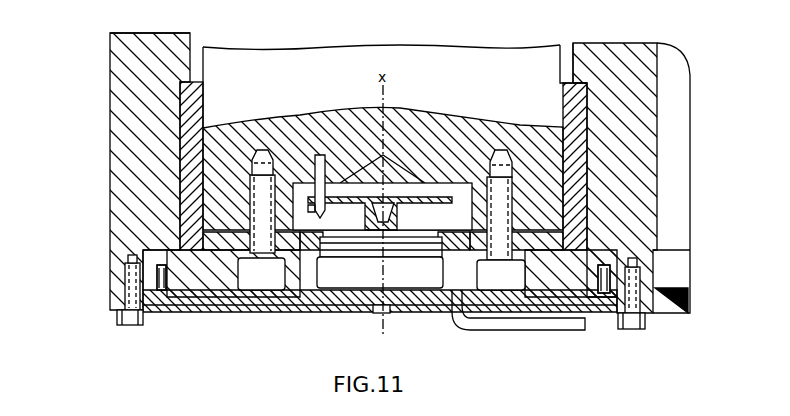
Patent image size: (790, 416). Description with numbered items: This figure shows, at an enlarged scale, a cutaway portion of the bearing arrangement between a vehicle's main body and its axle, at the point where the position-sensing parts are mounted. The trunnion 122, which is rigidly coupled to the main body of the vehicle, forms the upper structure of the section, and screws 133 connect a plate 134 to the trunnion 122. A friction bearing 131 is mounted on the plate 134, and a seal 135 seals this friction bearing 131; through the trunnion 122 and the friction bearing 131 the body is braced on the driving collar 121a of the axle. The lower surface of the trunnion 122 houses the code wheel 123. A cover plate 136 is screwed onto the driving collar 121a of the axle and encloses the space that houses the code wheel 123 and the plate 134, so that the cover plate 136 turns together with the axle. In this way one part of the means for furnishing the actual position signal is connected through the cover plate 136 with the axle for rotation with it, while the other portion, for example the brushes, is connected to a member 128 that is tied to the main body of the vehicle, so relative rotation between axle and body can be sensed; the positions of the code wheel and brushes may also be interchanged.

The driving collar 121a is at (152, 50).
The trunnion 122 is at (144, 105).
The code wheel 123 is at (340, 305).
The member 128 is at (420, 198).
The friction bearing 131 is at (576, 180).
The screws 133 is at (262, 237).
The plate 134 is at (198, 285).
The seal 135 is at (607, 297).
The cover plate 136 is at (436, 312).